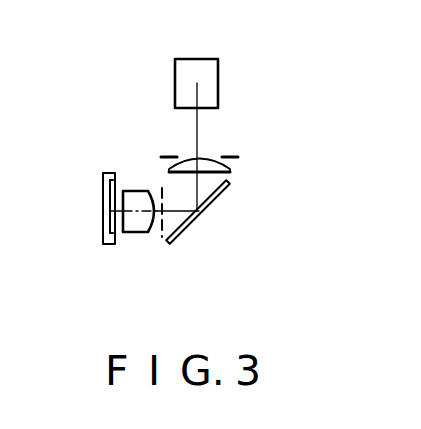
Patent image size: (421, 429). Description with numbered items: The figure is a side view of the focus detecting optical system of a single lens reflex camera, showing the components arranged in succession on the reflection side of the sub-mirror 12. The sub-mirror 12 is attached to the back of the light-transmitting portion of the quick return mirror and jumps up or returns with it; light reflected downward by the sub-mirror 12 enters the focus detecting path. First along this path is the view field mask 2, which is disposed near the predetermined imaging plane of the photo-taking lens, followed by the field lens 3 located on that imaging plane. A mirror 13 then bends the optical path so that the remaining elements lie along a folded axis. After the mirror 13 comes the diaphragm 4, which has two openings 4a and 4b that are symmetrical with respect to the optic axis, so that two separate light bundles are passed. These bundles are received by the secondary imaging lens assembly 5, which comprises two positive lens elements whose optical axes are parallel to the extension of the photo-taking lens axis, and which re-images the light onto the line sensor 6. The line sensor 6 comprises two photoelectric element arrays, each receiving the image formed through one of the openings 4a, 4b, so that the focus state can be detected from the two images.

The sub-mirror 12 is at (215, 83).
The view field mask 2 is at (230, 155).
The field lens 3 is at (231, 169).
The mirror 13 is at (223, 197).
The line sensor 6 is at (108, 176).
The secondary imaging lens assembly 5 is at (133, 223).
The diaphragm 4 is at (179, 209).
The opening 4a is at (161, 196).
The opening 4b is at (162, 223).